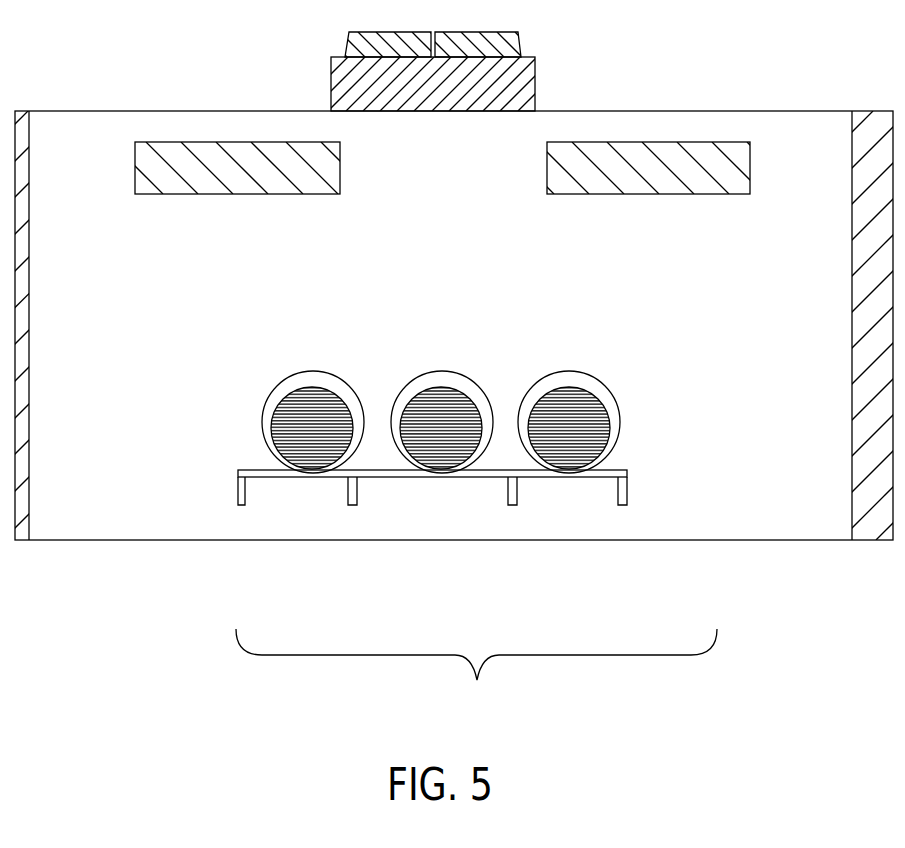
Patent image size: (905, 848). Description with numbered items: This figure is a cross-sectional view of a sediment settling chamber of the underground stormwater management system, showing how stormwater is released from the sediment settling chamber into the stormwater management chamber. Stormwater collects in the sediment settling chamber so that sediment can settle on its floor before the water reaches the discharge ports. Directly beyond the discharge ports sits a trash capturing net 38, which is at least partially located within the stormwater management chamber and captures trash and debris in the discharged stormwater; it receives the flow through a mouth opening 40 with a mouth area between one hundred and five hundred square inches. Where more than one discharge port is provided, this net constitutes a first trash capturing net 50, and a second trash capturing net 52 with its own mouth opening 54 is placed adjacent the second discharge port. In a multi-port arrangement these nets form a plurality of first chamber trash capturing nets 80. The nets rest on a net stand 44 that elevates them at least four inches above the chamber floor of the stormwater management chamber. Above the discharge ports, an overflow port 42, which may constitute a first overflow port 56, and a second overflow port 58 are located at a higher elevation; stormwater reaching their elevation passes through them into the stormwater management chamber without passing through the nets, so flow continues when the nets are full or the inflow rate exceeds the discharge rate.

The trash capturing net 38 is at (600, 439).
The mouth opening 40 is at (610, 395).
The overflow port 42 is at (738, 153).
The net stand 44 is at (493, 476).
The first trash capturing net 50 is at (590, 432).
The second trash capturing net 52 is at (437, 467).
The mouth opening 54 is at (403, 412).
The first overflow port 56 is at (661, 153).
The second overflow port 58 is at (243, 155).
The first chamber trash capturing nets 80 is at (476, 676).